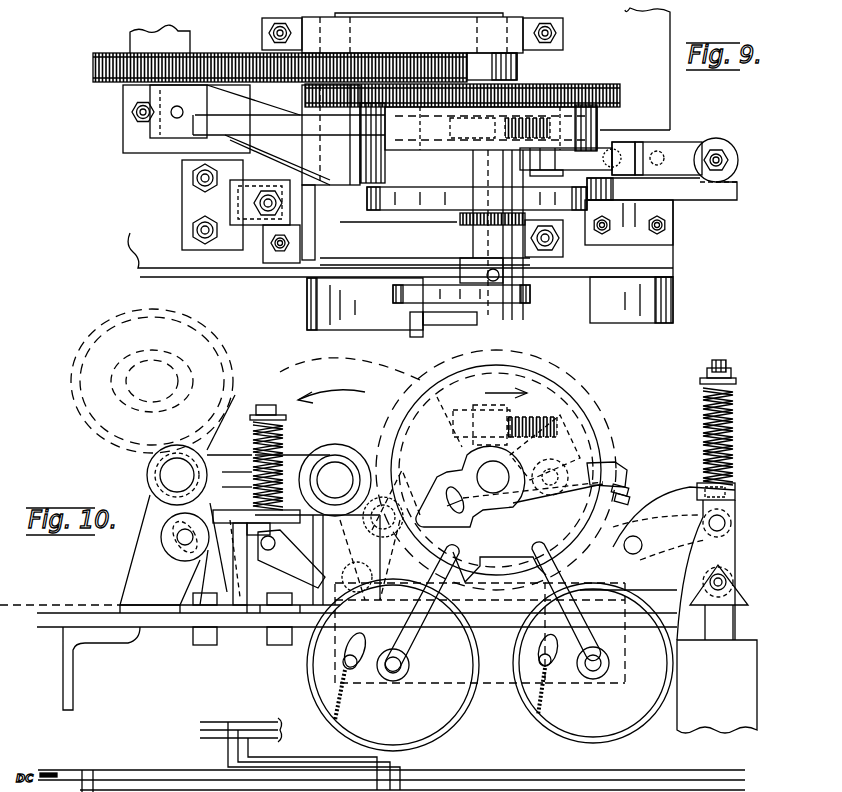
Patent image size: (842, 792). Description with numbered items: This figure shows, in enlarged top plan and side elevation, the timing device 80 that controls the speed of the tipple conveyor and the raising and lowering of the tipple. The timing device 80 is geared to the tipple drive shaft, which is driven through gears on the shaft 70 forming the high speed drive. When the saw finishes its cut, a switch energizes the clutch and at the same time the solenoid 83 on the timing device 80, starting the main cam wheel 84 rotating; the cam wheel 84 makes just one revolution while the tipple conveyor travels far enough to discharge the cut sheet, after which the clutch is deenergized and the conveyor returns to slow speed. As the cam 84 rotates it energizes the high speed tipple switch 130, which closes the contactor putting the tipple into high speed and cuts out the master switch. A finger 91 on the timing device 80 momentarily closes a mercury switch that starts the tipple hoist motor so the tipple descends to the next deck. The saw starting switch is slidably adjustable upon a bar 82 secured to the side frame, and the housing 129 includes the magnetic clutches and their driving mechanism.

In FIG. 9, the shaft 70 is at (160, 38).
In FIG. 9, the timing device 80 is at (211, 211).
In FIG. 10, the timing device 80 is at (173, 590).
In FIG. 9, the bar 82 is at (740, 164).
In FIG. 10, the solenoid 83 is at (748, 692).
In FIG. 9, the main cam wheel 84 is at (432, 198).
In FIG. 10, the main cam wheel 84 is at (470, 368).
In FIG. 10, the finger 91 is at (425, 622).
In FIG. 9, the housing 129 is at (320, 312).
In FIG. 10, the housing 129 is at (440, 718).
In FIG. 9, the high speed tipple switch 130 is at (611, 310).
In FIG. 10, the high speed tipple switch 130 is at (620, 728).